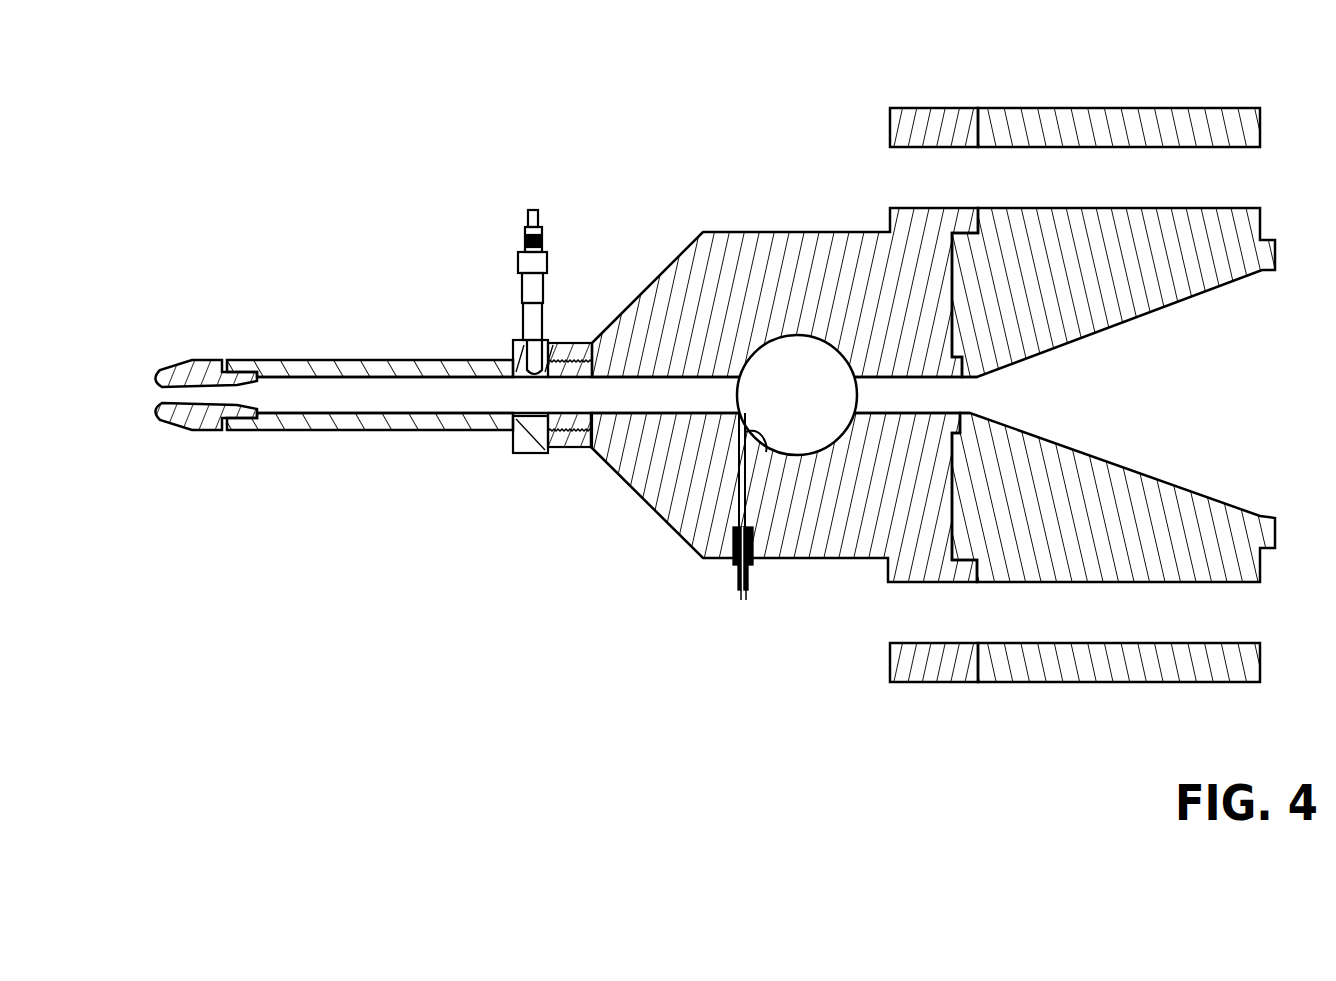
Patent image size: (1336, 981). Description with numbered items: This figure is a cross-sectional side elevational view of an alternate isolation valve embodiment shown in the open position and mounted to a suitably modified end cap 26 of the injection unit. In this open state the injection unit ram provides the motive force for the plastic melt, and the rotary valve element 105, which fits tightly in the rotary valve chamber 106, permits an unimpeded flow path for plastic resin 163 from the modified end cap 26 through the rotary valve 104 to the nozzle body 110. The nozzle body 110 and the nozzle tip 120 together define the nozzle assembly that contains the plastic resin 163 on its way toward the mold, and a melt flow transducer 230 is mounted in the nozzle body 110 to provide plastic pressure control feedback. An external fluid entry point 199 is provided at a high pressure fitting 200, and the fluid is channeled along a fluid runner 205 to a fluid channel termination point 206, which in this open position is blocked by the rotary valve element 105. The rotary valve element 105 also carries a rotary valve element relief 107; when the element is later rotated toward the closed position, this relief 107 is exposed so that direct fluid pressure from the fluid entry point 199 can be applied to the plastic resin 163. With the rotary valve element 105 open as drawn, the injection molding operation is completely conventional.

The modified end cap 26 is at (1033, 260).
The rotary valve 104 is at (703, 263).
The rotary valve element 105 is at (752, 368).
The rotary valve chamber 106 is at (777, 333).
The rotary valve element relief 107 is at (755, 443).
The nozzle body 110 is at (330, 370).
The nozzle tip 120 is at (185, 373).
The plastic resin 163 is at (470, 395).
The fluid entry point 199 is at (742, 590).
The high pressure fitting 200 is at (737, 573).
The fluid runner 205 is at (740, 488).
The fluid channel termination point 206 is at (740, 444).
The melt flow transducer 230 is at (533, 212).